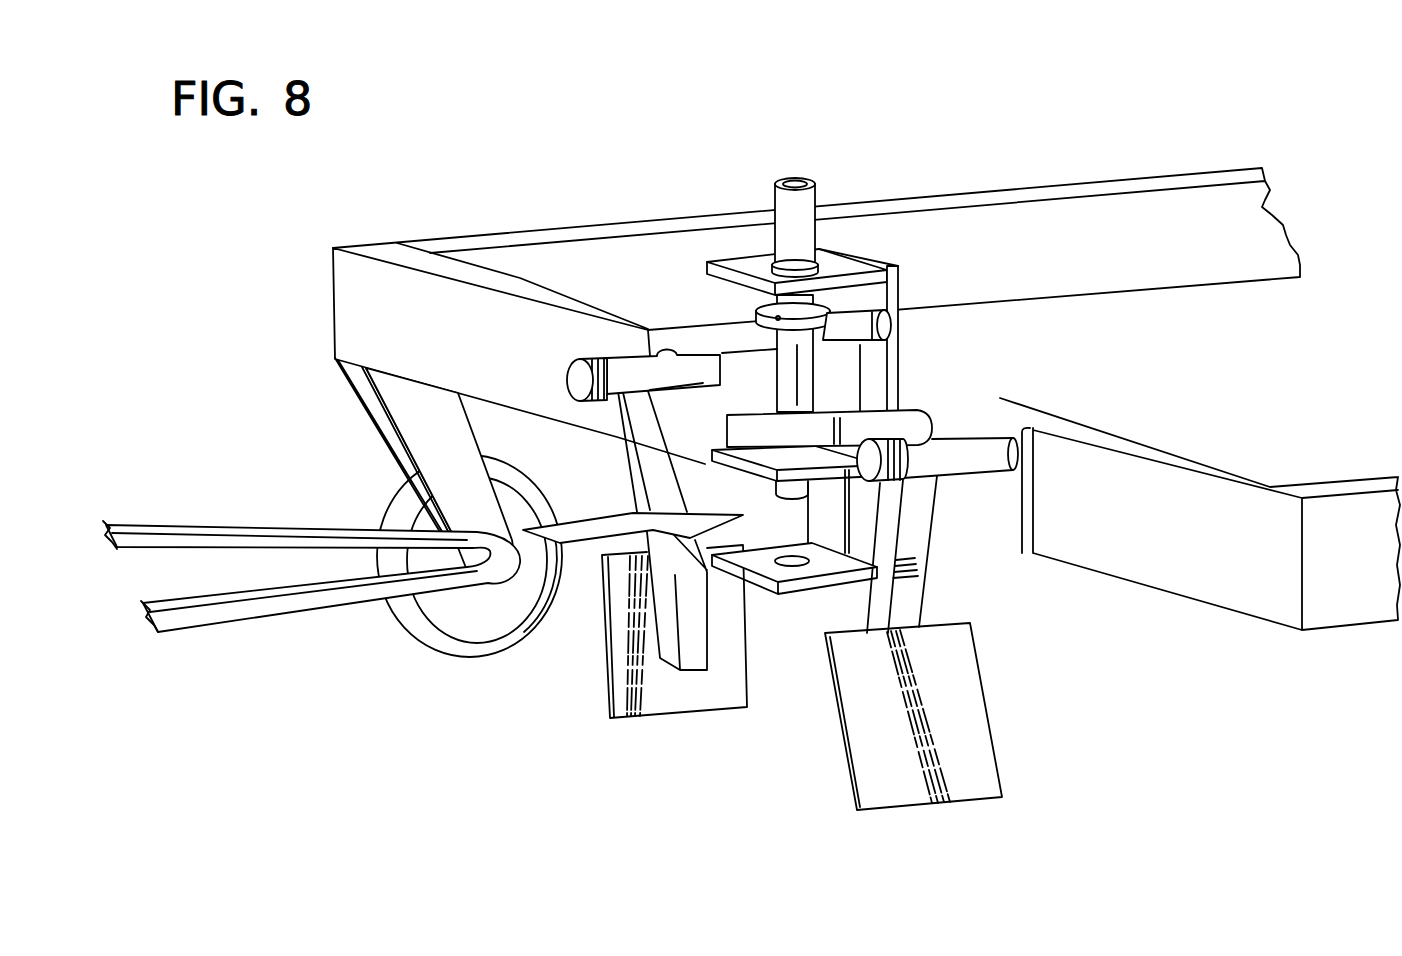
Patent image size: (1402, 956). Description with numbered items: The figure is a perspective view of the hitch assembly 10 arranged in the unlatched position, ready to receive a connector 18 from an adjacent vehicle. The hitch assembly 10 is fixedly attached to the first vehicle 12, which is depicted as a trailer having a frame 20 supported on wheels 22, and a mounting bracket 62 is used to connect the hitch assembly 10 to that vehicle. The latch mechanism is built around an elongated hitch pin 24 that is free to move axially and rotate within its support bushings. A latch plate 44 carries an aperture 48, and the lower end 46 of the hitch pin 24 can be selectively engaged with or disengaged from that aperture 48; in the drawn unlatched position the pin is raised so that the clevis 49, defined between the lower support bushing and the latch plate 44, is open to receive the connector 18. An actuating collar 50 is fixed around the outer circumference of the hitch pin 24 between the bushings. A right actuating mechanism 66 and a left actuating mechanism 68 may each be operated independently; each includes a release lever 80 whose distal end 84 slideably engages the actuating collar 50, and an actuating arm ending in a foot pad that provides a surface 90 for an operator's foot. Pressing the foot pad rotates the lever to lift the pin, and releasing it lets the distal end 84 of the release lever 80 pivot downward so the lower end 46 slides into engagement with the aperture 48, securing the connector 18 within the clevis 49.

The hitch assembly 10 is at (786, 730).
The first vehicle 12 is at (1120, 178).
The connector 18 is at (242, 527).
The frame 20 is at (520, 230).
The wheels 22 is at (540, 492).
The hitch pin 24 is at (816, 203).
The latch plate 44 is at (794, 591).
The lower end 46 is at (773, 486).
The aperture 48 is at (797, 552).
The clevis 49 is at (850, 522).
The actuating collar 50 is at (830, 340).
The mounting bracket 62 is at (1035, 488).
The right actuating mechanism 66 is at (1008, 688).
The left actuating mechanism 68 is at (575, 677).
The release lever 80 is at (722, 350).
The distal end 84 is at (882, 328).
The surface 90 is at (857, 313).